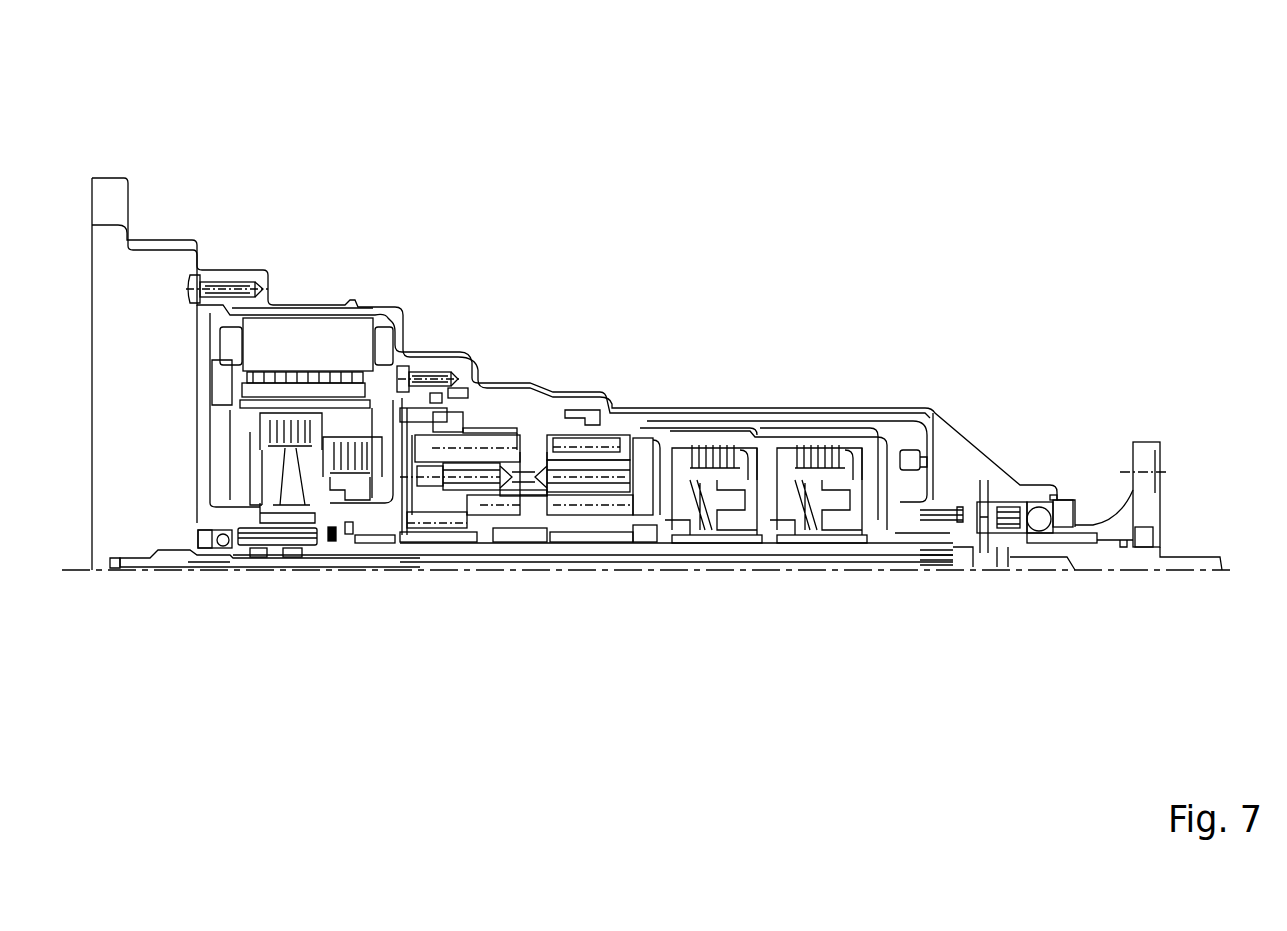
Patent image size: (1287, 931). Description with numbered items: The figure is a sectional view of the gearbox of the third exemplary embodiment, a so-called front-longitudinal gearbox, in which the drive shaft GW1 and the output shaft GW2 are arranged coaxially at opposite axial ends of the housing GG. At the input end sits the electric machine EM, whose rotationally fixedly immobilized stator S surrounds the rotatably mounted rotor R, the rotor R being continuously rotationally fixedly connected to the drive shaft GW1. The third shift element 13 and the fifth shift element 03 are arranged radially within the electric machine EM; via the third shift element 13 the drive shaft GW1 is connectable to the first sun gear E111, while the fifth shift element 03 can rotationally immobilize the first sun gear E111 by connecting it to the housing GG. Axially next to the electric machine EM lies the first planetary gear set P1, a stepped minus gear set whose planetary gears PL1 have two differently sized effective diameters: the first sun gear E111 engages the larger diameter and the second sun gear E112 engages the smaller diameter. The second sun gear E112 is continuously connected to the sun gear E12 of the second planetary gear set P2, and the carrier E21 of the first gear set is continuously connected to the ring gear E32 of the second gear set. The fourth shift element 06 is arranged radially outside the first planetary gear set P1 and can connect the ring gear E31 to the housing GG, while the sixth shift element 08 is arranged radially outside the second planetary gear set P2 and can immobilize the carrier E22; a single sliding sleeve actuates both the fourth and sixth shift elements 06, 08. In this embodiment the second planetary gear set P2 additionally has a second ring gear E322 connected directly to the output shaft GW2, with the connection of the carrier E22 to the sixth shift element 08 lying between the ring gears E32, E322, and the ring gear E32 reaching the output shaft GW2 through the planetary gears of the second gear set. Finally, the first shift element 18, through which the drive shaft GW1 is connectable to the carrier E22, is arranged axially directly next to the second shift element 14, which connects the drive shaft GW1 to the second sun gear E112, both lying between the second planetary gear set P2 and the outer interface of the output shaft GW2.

The housing GG is at (246, 276).
The electric machine EM is at (335, 125).
The rotor R is at (320, 393).
The stator S is at (332, 340).
The ring gear of the first planetary gear set E31 is at (447, 422).
The fourth shift element 06 is at (443, 393).
The carrier of the first planetary gear set E21 is at (478, 470).
The ring gear of the second planetary gear set E32 is at (563, 438).
The sixth shift element 08 is at (595, 413).
The second ring gear of the second planetary gear set E322 is at (627, 440).
The second shift element 14 is at (715, 445).
The first shift element 18 is at (820, 445).
The drive shaft GW1 is at (175, 560).
The third shift element 13 is at (296, 445).
The fifth shift element 03 is at (342, 483).
The first sun gear of the first planetary gear set E111 is at (450, 533).
The second sun gear of the first planetary gear set E112 is at (502, 513).
The planetary gears of the first planetary gear set PL1 is at (507, 495).
The sun gear of the second planetary gear set E12 is at (600, 513).
The carrier of the second planetary gear set E22 is at (617, 483).
The first planetary gear set P1 is at (484, 592).
The second planetary gear set P2 is at (602, 592).
The output shaft GW2 is at (1105, 560).